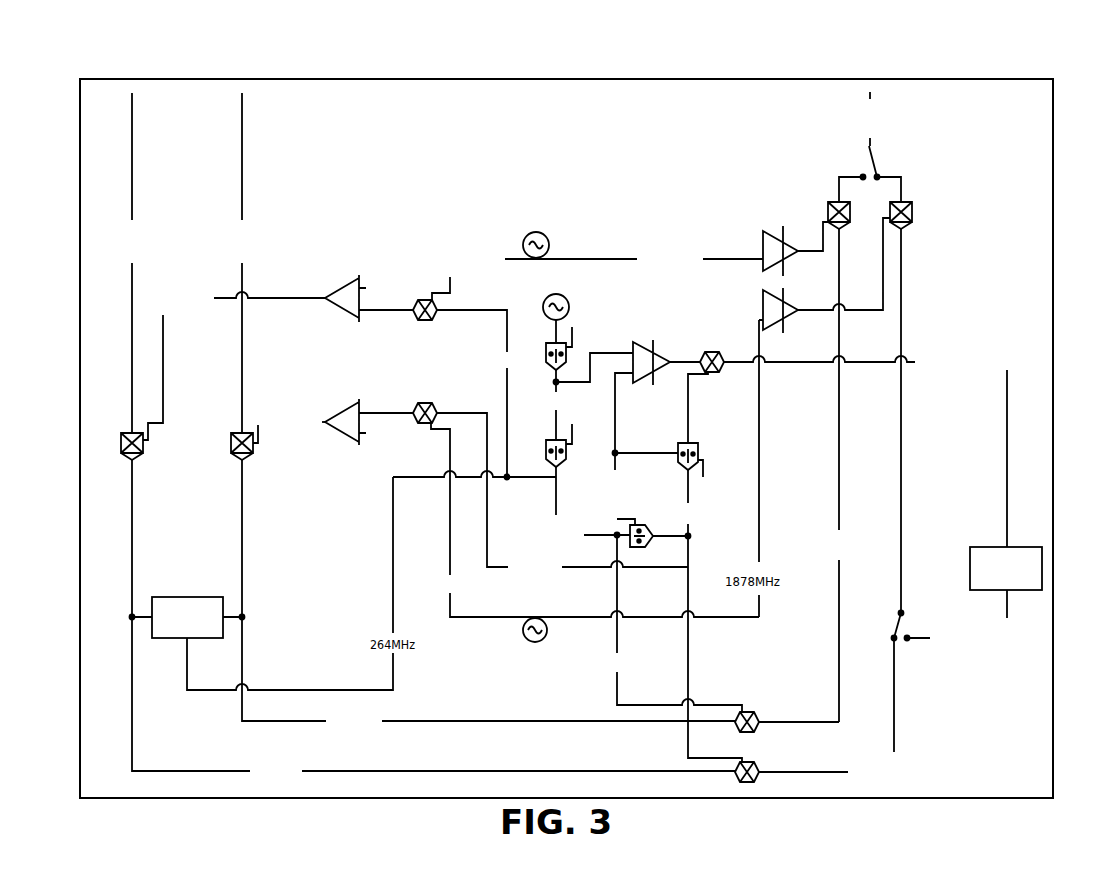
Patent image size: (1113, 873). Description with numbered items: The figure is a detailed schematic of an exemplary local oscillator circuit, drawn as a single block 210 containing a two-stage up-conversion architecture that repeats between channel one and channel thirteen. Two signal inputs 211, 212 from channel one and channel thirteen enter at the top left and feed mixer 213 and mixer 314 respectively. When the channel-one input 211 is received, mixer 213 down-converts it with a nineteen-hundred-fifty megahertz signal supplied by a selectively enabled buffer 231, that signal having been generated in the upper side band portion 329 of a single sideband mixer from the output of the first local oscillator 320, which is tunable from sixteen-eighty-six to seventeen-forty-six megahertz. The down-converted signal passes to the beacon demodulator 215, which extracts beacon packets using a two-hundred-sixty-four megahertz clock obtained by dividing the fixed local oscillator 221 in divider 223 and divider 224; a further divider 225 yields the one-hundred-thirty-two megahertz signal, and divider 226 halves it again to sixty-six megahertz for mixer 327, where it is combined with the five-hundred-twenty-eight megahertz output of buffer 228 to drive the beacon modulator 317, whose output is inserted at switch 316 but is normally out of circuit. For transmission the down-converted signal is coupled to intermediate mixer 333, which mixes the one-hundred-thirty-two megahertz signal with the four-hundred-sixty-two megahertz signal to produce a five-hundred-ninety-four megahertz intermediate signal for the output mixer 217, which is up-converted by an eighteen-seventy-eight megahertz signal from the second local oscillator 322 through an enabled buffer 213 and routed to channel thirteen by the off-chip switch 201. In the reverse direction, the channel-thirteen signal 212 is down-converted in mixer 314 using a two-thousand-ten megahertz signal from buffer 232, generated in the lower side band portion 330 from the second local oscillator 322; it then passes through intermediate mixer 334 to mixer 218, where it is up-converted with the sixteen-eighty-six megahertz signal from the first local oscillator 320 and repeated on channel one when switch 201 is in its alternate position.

The switch 201 is at (873, 148).
The transceiver chip boundary 210 is at (1053, 90).
The signal input 211 is at (133, 121).
The signal input 212 is at (243, 121).
The mixer / buffer 213 is at (121, 443).
The beacon demodulator 215 is at (152, 630).
The output mixer 217 is at (912, 213).
The mixer 218 is at (832, 203).
The fixed LO 221 is at (544, 292).
The divider 223 is at (556, 373).
The divider 224 is at (556, 468).
The divider 225 is at (647, 548).
The divider 226 is at (698, 445).
The buffer 228 is at (633, 342).
The buffer 231 is at (359, 278).
The buffer 232 is at (323, 425).
The mixer 314 is at (231, 444).
The switch 316 is at (900, 642).
The beacon modulator 317 is at (1033, 590).
The LO 1 320 is at (540, 197).
The LO 2 322 is at (516, 697).
The mixer 327 is at (713, 352).
The upper side band portion 329 is at (427, 300).
The lower side band portion 330 is at (428, 430).
The intermediate mixer 333 is at (748, 783).
The intermediate mixer 334 is at (754, 732).